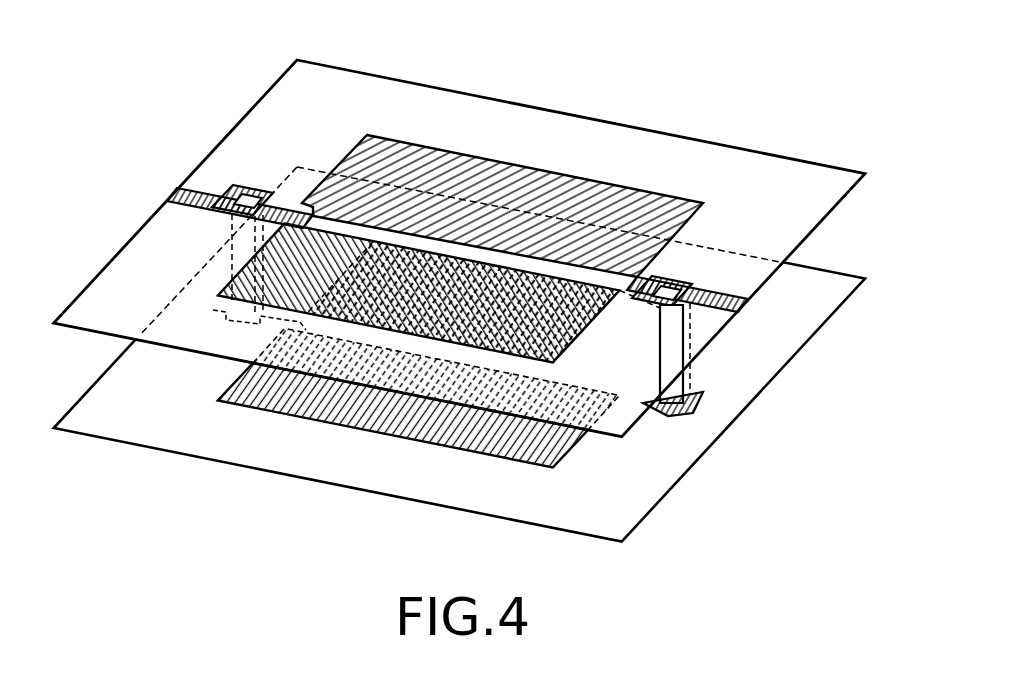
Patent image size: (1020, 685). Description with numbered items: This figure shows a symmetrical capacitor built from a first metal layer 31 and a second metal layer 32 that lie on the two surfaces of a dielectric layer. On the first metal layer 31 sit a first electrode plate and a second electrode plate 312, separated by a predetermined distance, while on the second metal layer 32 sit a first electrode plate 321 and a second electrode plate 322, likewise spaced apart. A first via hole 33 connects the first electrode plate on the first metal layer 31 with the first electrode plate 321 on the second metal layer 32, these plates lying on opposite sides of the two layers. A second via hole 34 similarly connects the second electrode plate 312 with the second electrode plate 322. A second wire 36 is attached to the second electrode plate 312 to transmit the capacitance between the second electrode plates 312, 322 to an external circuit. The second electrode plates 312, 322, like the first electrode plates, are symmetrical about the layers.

The first metal layer 31 is at (245, 147).
The second metal layer 32 is at (288, 450).
The second electrode plate 312 is at (375, 152).
The second electrode plate 322 is at (527, 443).
The first via hole 33 is at (225, 243).
The second via hole 34 is at (696, 384).
The second wire 36 is at (207, 188).
The first electrode plate 321 is at (702, 318).